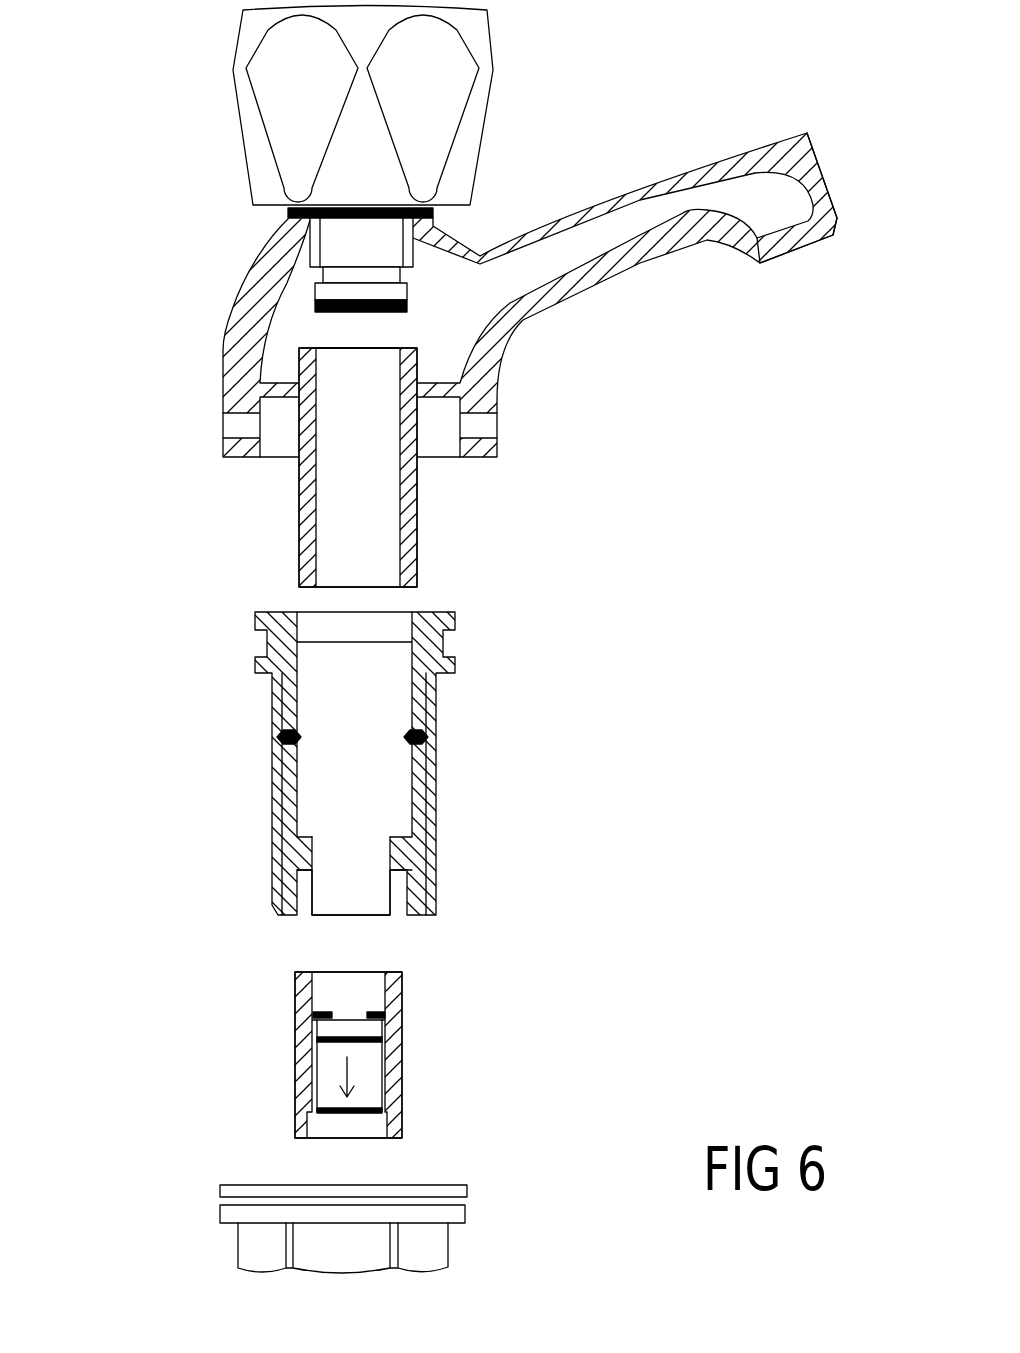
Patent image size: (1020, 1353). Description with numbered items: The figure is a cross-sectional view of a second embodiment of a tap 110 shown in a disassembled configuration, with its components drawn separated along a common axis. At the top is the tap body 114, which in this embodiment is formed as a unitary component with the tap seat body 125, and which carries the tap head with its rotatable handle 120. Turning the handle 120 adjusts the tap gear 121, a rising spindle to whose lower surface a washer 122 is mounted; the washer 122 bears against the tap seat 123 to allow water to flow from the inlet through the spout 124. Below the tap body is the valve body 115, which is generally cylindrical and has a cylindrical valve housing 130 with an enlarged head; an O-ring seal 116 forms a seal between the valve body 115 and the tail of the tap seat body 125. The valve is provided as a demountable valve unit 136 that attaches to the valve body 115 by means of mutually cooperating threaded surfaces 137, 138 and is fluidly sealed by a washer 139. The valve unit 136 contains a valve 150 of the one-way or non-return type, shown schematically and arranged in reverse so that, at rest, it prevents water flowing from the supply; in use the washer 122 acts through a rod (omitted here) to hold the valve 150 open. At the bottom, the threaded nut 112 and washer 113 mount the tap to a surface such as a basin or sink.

The tap 110 is at (145, 1204).
The threaded nut 112 is at (440, 1247).
The washer 113 is at (462, 1190).
The tap body 114 is at (618, 323).
The valve body 115 is at (217, 627).
The O-ring seal 116 is at (437, 693).
The rotatable handle 120 is at (460, 135).
The tap gear 121 is at (380, 243).
The washer 122 is at (400, 313).
The tap seat 123 is at (407, 343).
The spout 124 is at (780, 222).
The tap seat body 125 is at (440, 538).
The valve housing 130 is at (510, 784).
The valve unit 136 is at (441, 1078).
The threaded surface 137 is at (397, 897).
The threaded surface 138 is at (380, 990).
The washer 139 is at (370, 1012).
The valve 150 is at (367, 1083).